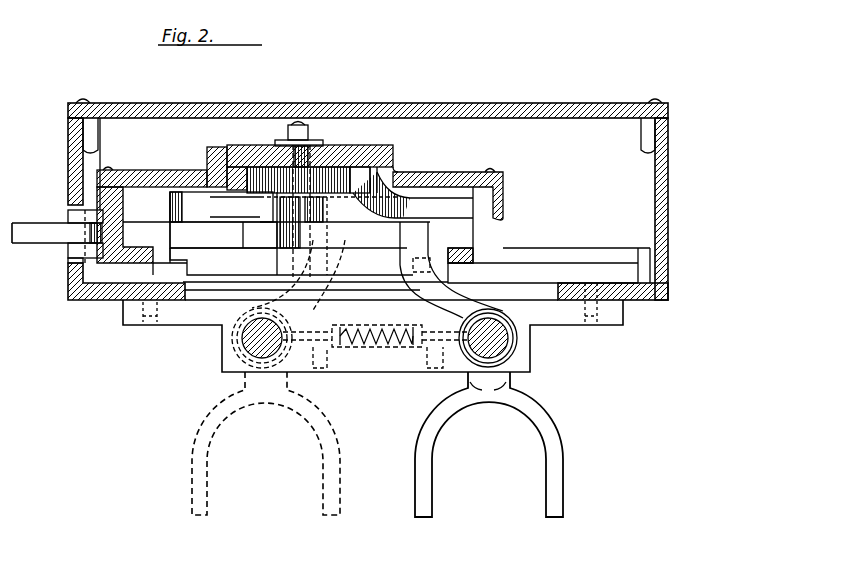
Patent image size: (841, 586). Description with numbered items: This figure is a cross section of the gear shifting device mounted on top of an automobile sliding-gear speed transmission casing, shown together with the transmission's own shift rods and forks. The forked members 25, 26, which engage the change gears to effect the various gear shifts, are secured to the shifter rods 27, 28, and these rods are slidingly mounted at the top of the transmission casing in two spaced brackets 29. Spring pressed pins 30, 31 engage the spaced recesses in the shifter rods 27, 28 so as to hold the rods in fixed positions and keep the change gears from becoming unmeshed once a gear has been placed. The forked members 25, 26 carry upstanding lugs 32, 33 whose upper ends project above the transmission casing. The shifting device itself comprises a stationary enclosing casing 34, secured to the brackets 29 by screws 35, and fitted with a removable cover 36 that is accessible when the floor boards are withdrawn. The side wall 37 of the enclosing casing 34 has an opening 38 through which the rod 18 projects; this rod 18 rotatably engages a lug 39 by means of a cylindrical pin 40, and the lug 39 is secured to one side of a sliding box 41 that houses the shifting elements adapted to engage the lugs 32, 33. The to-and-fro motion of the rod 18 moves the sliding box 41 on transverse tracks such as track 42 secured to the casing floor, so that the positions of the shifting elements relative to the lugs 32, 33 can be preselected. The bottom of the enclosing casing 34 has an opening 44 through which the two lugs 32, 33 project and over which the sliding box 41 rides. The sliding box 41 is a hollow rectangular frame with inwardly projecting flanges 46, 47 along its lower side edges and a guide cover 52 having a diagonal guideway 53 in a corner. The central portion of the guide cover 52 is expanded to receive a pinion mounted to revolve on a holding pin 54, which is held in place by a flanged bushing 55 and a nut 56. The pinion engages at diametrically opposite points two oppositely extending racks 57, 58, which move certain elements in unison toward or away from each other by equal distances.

The rod 18 is at (30, 230).
The forked member 25 is at (560, 465).
The forked member 26 is at (338, 473).
The shifter rod 27 is at (500, 346).
The shifter rod 28 is at (250, 338).
The spaced brackets 29 is at (622, 318).
The spring pressed pin 30 is at (328, 345).
The spring pressed pin 31 is at (420, 327).
The upstanding lug 32 is at (408, 233).
The upstanding lug 33 is at (350, 238).
The enclosing casing 34 is at (669, 225).
The screws 35 is at (148, 326).
The cover 36 is at (512, 103).
The side wall 37 is at (70, 158).
The opening 38 is at (84, 266).
The lug 39 is at (68, 214).
The cylindrical pin 40 is at (68, 252).
The sliding box 41 is at (120, 205).
The track 42 is at (602, 257).
The opening 44 is at (513, 293).
The inwardly projecting flange 46 is at (494, 240).
The inwardly projecting flange 47 is at (125, 286).
The guide cover 52 is at (434, 173).
The guideway 53 is at (332, 172).
The holding pin 54 is at (305, 152).
The flanged bushing 55 is at (275, 142).
The nut 56 is at (326, 112).
The rack 57 is at (372, 197).
The rack 58 is at (209, 166).